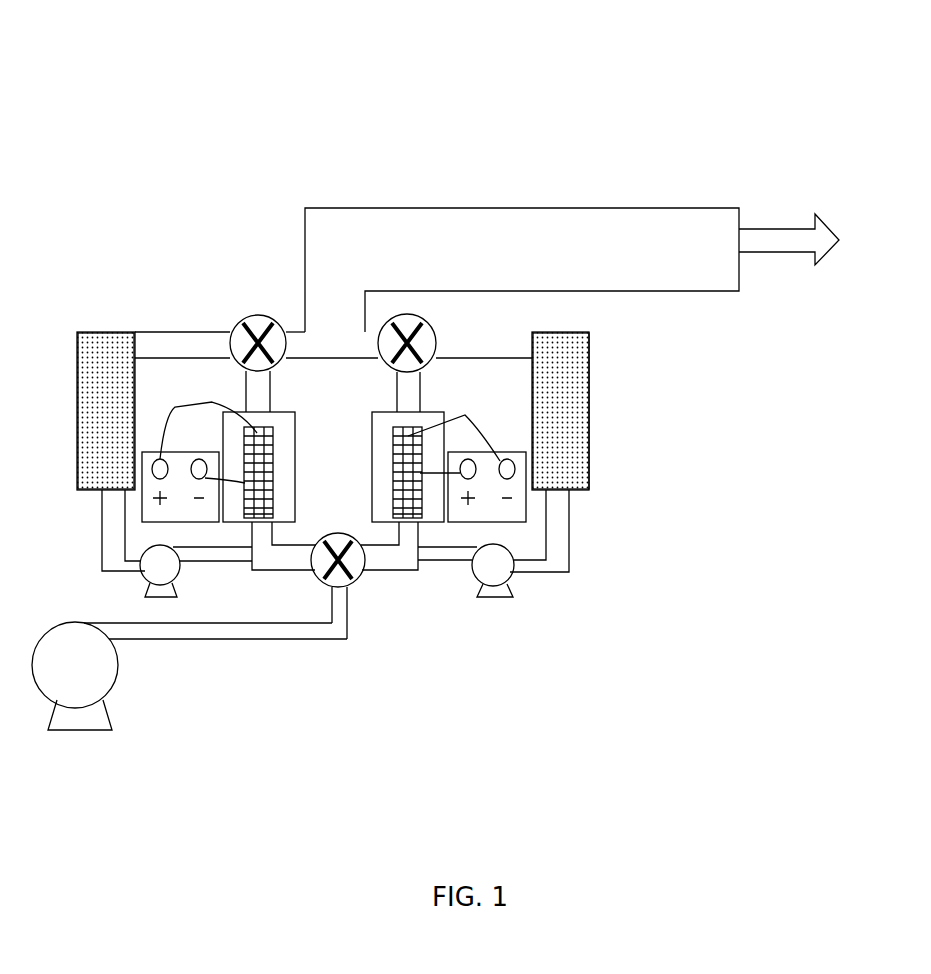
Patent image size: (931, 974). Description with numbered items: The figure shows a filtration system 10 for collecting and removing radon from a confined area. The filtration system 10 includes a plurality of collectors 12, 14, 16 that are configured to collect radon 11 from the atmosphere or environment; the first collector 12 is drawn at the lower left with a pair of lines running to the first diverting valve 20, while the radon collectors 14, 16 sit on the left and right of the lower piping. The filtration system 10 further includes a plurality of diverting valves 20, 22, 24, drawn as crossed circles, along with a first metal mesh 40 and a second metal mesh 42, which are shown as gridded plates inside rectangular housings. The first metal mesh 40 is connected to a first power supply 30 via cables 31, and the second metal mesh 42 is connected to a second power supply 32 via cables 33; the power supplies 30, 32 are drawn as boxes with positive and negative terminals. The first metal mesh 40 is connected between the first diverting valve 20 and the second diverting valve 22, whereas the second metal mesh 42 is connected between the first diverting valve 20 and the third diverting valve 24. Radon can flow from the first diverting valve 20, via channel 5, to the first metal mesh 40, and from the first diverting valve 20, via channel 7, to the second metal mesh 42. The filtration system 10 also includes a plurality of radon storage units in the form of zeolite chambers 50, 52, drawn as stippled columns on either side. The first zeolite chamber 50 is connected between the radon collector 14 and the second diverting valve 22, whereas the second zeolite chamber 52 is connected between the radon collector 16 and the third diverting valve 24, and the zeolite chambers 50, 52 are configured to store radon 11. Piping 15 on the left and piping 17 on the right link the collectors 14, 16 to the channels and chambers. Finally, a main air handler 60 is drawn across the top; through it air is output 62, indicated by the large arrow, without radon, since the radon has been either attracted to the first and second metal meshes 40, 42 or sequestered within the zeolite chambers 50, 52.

The filtration system 10 is at (203, 40).
The radon 11 is at (85, 400).
The collector 12 is at (100, 683).
The radon collector 14 is at (142, 577).
The conduit 15 is at (118, 530).
The radon collector 16 is at (500, 576).
The conduit 17 is at (558, 540).
The first diverting valve 20 is at (360, 578).
The second diverting valve 22 is at (258, 315).
The third diverting valve 24 is at (428, 326).
The first power supply 30 is at (148, 452).
The cables 31 is at (212, 402).
The second power supply 32 is at (520, 452).
The cables 33 is at (457, 460).
The first metal mesh 40 is at (267, 458).
The second metal mesh 42 is at (400, 467).
The first zeolite chamber 50 is at (110, 332).
The second zeolite chamber 52 is at (558, 332).
The main air handler 60 is at (528, 226).
The air output 62 is at (798, 228).
The channel 5 is at (262, 571).
The channel 7 is at (410, 571).